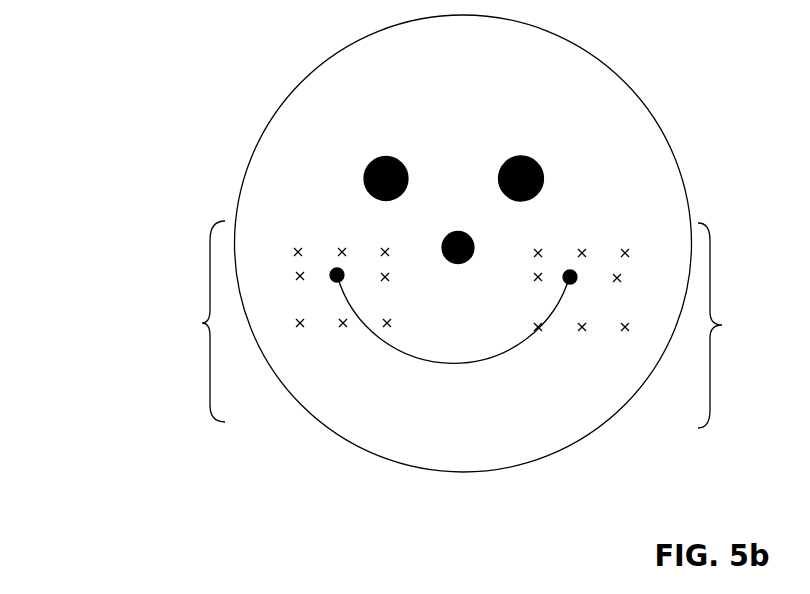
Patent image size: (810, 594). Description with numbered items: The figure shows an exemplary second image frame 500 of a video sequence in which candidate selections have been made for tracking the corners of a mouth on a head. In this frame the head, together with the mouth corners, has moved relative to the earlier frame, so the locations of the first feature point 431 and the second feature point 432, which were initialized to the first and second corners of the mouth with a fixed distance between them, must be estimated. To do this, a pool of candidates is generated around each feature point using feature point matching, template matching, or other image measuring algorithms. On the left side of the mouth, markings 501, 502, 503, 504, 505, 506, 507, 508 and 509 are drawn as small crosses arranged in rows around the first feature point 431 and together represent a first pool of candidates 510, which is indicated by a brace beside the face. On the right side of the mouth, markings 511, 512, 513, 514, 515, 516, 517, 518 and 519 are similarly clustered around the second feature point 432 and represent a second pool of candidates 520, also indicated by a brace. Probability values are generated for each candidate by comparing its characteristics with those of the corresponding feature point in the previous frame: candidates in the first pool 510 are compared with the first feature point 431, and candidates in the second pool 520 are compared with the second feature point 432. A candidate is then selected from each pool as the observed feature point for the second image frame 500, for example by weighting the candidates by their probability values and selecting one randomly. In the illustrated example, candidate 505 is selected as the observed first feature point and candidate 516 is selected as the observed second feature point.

The second image frame 500 is at (26, 245).
The first pool of candidates 510 is at (184, 321).
The second pool of candidates 520 is at (737, 325).
The first feature point 431 is at (330, 273).
The second feature point 432 is at (578, 276).
The marking 501 is at (298, 246).
The marking 502 is at (342, 246).
The marking 503 is at (385, 246).
The marking 504 is at (296, 279).
The marking 505 is at (334, 282).
The marking 506 is at (387, 281).
The marking 507 is at (302, 327).
The marking 508 is at (345, 327).
The marking 509 is at (389, 327).
The marking 511 is at (538, 247).
The marking 512 is at (582, 247).
The marking 513 is at (625, 247).
The marking 514 is at (534, 281).
The marking 515 is at (575, 283).
The marking 516 is at (621, 281).
The marking 517 is at (536, 331).
The marking 518 is at (580, 331).
The marking 519 is at (623, 331).